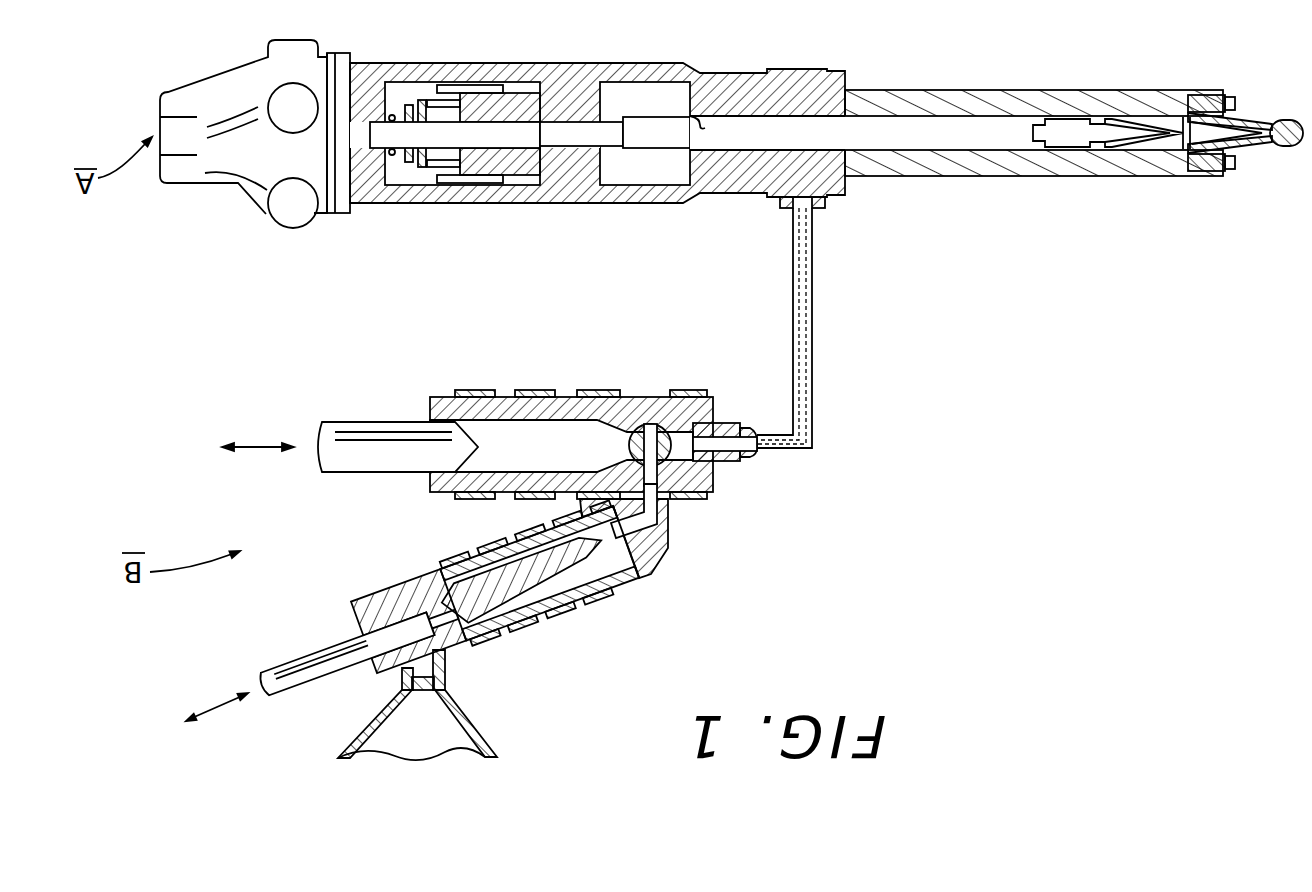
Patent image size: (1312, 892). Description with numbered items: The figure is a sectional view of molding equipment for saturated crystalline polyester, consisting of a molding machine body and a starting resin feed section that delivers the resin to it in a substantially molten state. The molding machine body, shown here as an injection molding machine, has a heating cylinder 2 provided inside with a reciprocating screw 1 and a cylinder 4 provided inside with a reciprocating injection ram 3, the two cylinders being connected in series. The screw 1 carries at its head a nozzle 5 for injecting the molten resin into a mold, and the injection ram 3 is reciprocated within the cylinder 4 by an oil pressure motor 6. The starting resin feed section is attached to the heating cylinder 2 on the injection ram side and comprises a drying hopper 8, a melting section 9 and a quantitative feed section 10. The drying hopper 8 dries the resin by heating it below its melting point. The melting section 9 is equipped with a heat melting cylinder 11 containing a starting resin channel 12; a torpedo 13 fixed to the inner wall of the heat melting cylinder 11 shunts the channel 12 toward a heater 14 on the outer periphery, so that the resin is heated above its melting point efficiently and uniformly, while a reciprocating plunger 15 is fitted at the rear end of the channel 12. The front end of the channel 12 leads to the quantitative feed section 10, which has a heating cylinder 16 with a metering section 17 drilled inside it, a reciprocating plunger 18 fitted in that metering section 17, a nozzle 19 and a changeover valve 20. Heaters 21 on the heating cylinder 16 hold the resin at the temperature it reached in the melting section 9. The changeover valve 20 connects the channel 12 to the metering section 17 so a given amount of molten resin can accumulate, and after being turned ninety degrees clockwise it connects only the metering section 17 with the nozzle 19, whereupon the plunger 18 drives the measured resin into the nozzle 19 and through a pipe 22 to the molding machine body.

The reciprocating screw 1 is at (930, 137).
The heating cylinder 2 is at (1090, 163).
The injection ram 3 is at (523, 157).
The cylinder 4 is at (527, 93).
The nozzle 5 is at (1293, 117).
The oil pressure motor 6 is at (440, 602).
The drying hopper 8 is at (468, 722).
The melting section 9 is at (238, 173).
The quantitative feed section 10 is at (533, 429).
The heat melting cylinder 11 is at (417, 592).
The starting resin channel 12 is at (410, 590).
The torpedo 13 is at (548, 575).
The heater 14 is at (505, 626).
The reciprocating plunger 15 is at (292, 663).
The heating cylinder 16 is at (440, 478).
The metering section 17 is at (490, 435).
The reciprocating plunger 18 is at (357, 465).
The nozzle 19 is at (750, 450).
The changeover valve 20 is at (648, 426).
The heaters 21 is at (522, 390).
The pipe 22 is at (813, 345).